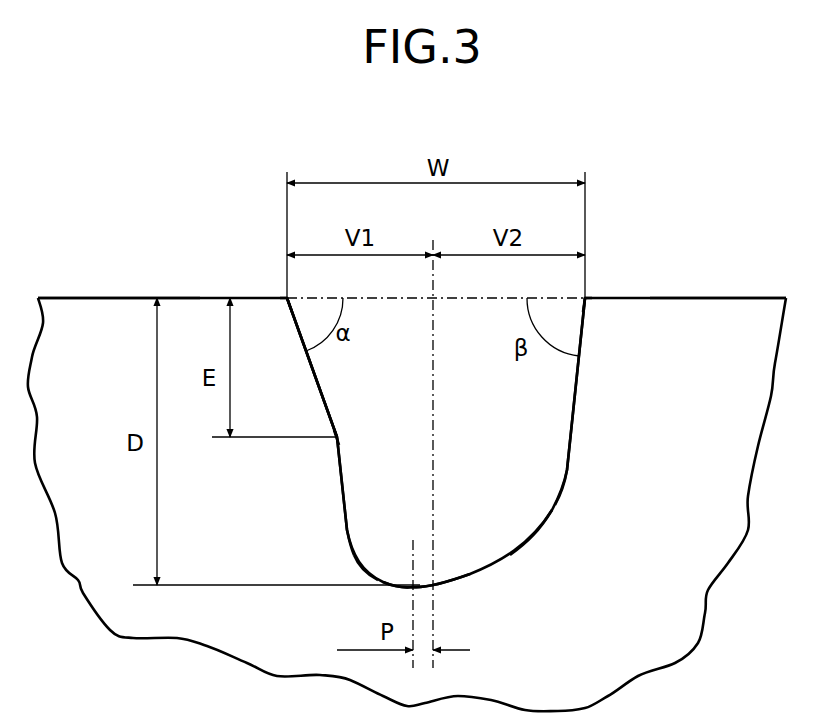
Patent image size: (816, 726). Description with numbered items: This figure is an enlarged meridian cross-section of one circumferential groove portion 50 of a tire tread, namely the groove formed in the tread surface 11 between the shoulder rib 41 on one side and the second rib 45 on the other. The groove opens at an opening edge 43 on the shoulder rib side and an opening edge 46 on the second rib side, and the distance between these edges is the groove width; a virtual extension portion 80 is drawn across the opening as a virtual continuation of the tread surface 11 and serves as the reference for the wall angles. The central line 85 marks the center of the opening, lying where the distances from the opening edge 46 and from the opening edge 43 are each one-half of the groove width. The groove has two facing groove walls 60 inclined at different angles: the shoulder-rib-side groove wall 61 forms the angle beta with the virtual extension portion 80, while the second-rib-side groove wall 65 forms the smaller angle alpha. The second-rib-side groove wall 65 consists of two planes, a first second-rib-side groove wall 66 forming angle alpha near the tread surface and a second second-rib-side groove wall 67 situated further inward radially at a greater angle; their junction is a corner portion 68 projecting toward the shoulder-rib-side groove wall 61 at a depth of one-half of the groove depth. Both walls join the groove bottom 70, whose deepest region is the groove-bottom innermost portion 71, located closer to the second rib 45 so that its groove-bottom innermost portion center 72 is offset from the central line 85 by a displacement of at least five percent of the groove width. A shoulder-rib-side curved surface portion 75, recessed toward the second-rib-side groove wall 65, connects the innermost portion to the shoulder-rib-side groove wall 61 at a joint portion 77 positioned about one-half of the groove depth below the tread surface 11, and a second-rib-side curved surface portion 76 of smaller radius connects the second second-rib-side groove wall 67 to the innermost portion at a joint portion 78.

The tread surface 11 is at (190, 298).
The shoulder rib 41 is at (732, 338).
The opening edge on the shoulder rib side 43 is at (585, 296).
The second rib 45 is at (72, 337).
The opening edge on the second rib side 46 is at (287, 296).
The circumferential groove portion 50 is at (566, 444).
The groove wall 60 is at (313, 371).
The shoulder-rib-side groove wall 61 is at (572, 402).
The second-rib-side groove wall 65 is at (356, 414).
The first second-rib-side groove wall 66 is at (325, 404).
The second second-rib-side groove wall 67 is at (345, 490).
The corner portion 68 is at (338, 437).
The groove bottom 70 is at (362, 597).
The groove-bottom innermost portion 71 is at (410, 586).
The groove-bottom innermost portion center 72 is at (413, 588).
The shoulder-rib-side curved surface portion 75 is at (526, 538).
The second-rib-side curved surface portion 76 is at (366, 565).
The joint portion 77 is at (566, 473).
The joint portion 78 is at (346, 532).
The virtual extension portion 80 is at (477, 297).
The central line 85 is at (432, 283).